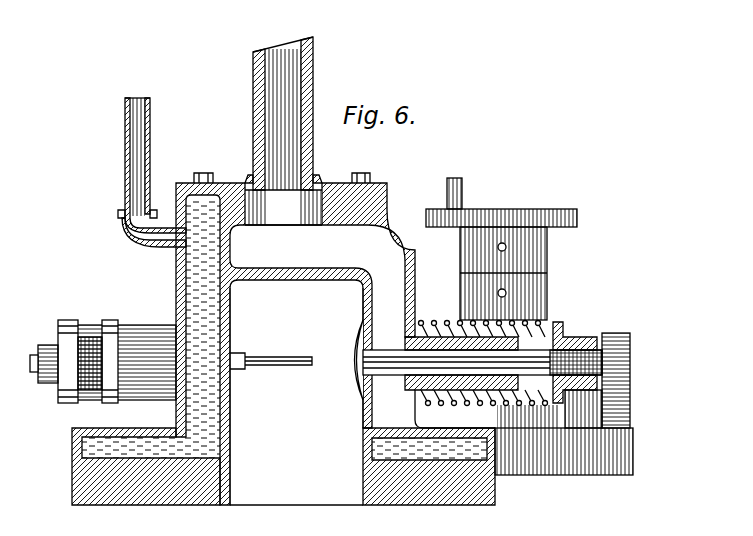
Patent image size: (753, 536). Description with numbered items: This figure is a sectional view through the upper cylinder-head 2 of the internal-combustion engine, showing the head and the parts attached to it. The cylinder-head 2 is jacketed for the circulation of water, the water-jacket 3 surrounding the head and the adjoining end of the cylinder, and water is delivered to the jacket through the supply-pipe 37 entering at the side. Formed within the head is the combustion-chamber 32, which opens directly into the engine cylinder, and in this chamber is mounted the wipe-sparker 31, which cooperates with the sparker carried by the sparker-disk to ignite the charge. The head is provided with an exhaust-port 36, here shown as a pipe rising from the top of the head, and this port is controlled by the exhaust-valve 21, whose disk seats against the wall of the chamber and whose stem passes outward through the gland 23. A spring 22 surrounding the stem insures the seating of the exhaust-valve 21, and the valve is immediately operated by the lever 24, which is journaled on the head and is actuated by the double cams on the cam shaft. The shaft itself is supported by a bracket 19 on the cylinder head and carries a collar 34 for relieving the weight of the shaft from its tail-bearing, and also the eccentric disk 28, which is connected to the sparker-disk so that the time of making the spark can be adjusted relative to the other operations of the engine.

The cylinder-head 2 is at (440, 492).
The water-jacket 3 is at (188, 297).
The bracket 19 is at (610, 452).
The exhaust-valve 21 is at (355, 377).
The spring 22 is at (547, 323).
The gland 23 is at (427, 343).
The lever 24 is at (630, 370).
The eccentric disk 28 is at (572, 212).
The wipe-sparker 31 is at (294, 360).
The combustion-chamber 32 is at (296, 396).
The collar 34 is at (510, 327).
The exhaust-port 36 is at (318, 78).
The supply-pipe 37 is at (128, 175).